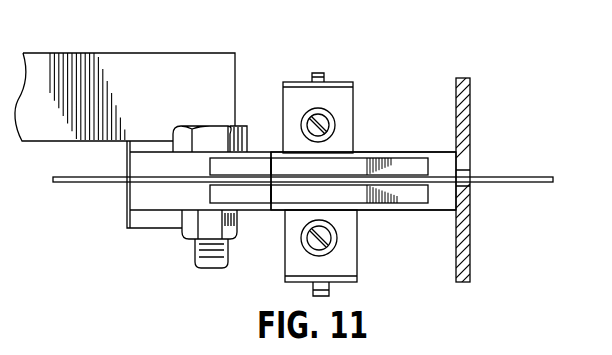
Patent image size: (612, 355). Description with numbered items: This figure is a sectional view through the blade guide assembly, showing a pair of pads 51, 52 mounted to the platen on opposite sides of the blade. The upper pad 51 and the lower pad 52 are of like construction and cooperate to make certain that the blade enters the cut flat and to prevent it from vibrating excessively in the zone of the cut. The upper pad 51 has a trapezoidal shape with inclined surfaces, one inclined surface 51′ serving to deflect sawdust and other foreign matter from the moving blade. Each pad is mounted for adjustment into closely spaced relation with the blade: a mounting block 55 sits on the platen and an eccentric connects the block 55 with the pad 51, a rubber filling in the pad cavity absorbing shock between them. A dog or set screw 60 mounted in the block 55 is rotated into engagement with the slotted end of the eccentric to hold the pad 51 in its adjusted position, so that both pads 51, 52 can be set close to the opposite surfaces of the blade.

The upper pad 51 is at (343, 130).
The inclined surface 51′ is at (274, 120).
The lower pad 52 is at (352, 199).
The mounting block 55 is at (291, 82).
The set screw 60 is at (320, 72).